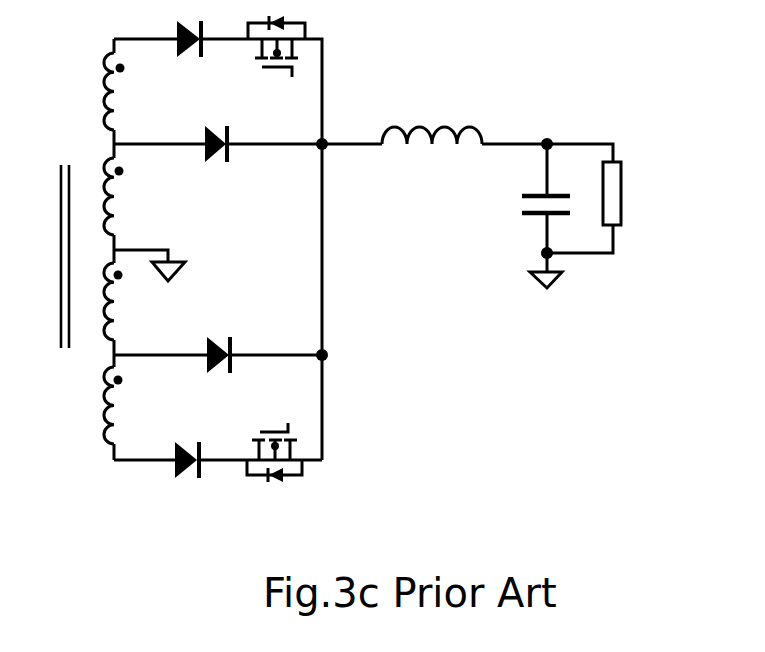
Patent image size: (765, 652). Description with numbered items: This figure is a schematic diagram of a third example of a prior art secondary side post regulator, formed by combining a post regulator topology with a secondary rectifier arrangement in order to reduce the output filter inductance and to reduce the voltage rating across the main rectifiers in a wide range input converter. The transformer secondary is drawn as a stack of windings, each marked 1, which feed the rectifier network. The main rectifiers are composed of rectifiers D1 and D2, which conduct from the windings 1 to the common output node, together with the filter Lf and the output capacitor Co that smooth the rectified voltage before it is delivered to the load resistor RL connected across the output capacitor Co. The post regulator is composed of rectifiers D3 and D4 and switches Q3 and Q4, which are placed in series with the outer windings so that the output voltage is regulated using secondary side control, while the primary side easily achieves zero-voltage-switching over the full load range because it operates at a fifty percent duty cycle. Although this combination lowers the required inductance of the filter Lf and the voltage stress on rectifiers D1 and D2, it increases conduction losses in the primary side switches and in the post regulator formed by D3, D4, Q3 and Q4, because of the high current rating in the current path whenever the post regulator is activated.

The transformer secondary winding 1 is at (127, 248).
The rectifier D1 is at (221, 165).
The rectifier D2 is at (221, 333).
The rectifier D3 is at (197, 62).
The rectifier D4 is at (196, 437).
The switch Q3 is at (276, 65).
The switch Q4 is at (274, 436).
The filter Lf is at (432, 158).
The output capacitor Co is at (531, 228).
The load resistor RL is at (634, 218).